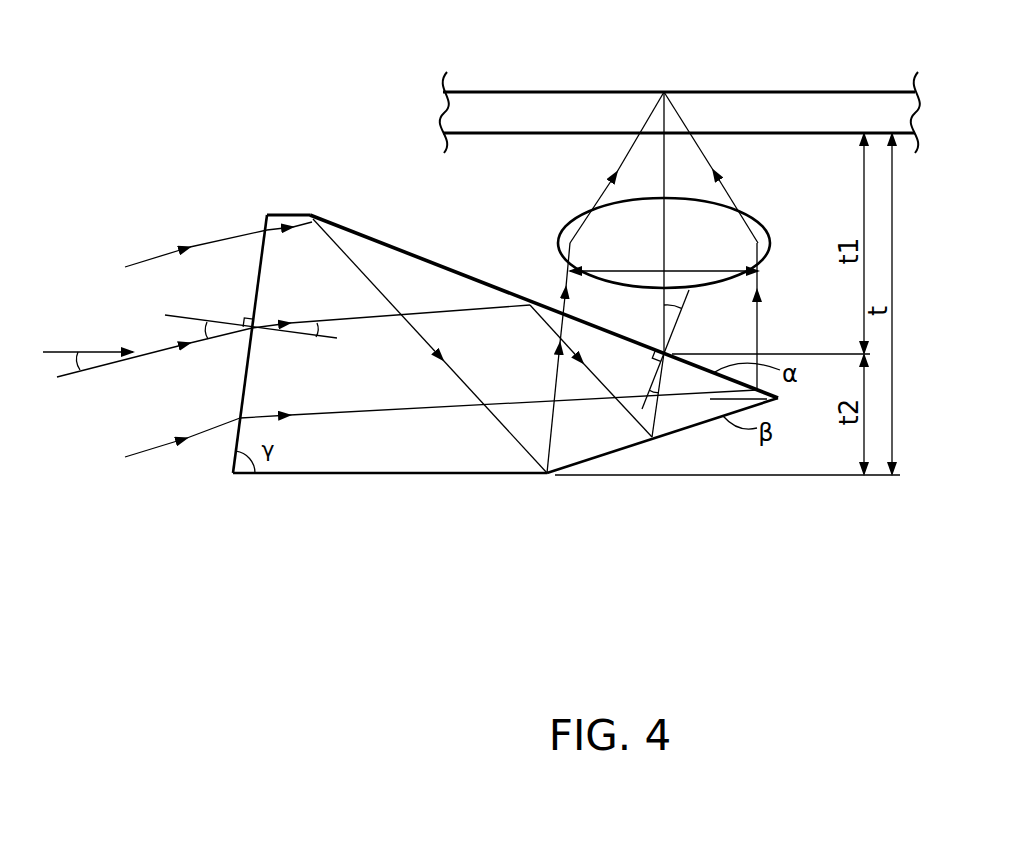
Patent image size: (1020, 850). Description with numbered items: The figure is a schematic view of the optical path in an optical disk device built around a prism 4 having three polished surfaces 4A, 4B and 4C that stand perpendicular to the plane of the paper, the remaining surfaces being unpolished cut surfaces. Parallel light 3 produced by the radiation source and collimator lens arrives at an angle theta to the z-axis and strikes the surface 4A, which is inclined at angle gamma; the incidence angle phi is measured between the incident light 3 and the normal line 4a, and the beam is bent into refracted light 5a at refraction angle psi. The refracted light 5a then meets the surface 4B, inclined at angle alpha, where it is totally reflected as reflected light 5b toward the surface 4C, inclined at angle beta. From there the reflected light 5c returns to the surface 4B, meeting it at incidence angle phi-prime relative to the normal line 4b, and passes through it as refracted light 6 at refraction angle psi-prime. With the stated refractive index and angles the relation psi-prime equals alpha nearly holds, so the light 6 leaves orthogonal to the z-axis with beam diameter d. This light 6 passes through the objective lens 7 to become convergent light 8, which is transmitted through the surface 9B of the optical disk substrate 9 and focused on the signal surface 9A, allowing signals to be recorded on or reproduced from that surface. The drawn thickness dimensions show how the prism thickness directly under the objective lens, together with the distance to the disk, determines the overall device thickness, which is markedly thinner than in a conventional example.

The parallel light 3 is at (153, 357).
The prism 4 is at (477, 310).
The surface 4A is at (240, 410).
The surface 4B is at (430, 262).
The surface 4C is at (677, 430).
The normal line 4a is at (302, 333).
The normal line 4b is at (691, 291).
The refracted light 5a is at (363, 322).
The reflected light 5b is at (548, 328).
The reflected light 5c is at (660, 404).
The refracted light 6 is at (660, 305).
The objective lens 7 is at (766, 235).
The convergent light 8 is at (665, 189).
The optical disk substrate 9 is at (680, 103).
The signal surface 9A is at (810, 89).
The surface 9B is at (820, 136).